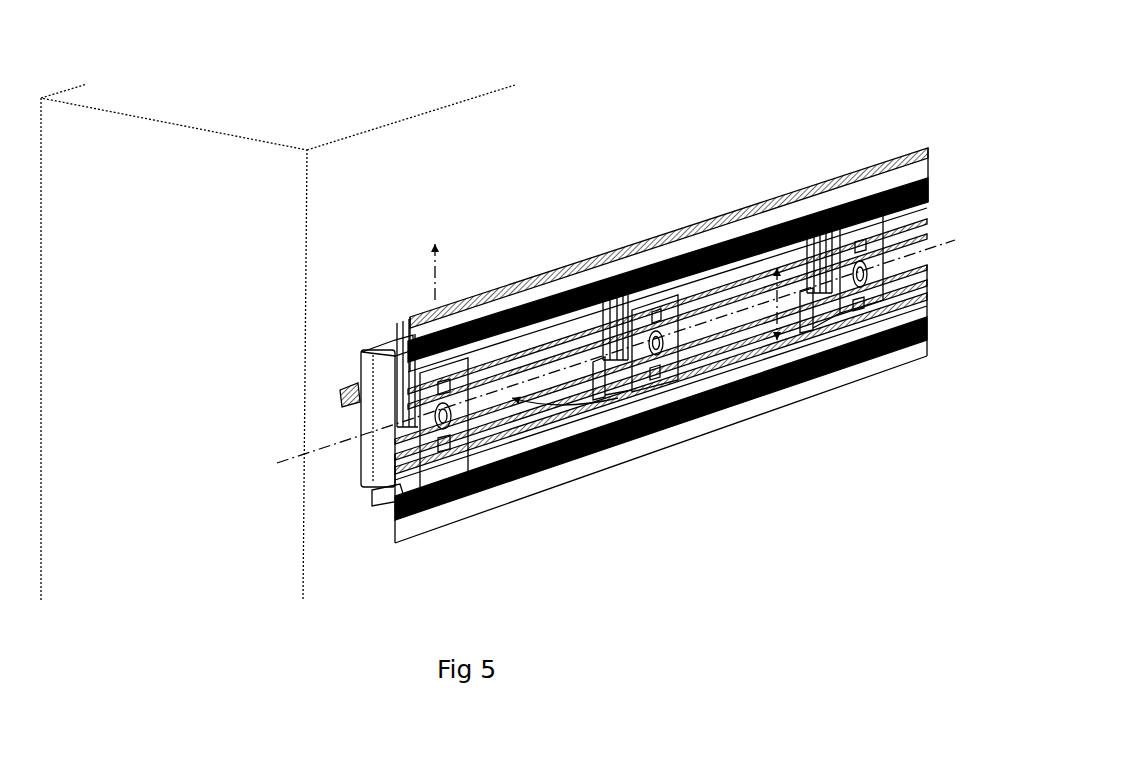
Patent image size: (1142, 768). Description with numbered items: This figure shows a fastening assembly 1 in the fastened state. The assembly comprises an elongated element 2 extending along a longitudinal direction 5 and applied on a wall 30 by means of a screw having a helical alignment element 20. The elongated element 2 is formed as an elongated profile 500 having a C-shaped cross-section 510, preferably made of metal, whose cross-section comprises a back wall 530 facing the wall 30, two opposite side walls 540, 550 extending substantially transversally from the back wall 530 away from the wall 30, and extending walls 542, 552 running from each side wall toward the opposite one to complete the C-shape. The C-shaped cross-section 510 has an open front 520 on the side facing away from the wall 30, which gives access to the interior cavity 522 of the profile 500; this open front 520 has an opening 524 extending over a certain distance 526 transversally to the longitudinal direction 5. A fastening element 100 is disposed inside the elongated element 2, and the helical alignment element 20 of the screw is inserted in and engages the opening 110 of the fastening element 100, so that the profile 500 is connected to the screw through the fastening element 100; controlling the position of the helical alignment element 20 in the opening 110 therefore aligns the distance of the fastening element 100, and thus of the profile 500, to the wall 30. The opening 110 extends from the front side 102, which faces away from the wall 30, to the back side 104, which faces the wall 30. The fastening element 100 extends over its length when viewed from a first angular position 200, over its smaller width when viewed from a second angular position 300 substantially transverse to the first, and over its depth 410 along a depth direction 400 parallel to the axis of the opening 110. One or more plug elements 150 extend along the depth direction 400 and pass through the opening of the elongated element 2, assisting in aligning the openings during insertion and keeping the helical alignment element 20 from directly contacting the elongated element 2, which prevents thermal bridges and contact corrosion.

The fastening assembly 1 is at (566, 110).
The elongated element 2 is at (565, 285).
The longitudinal direction 5 is at (290, 460).
The helical alignment element 20 is at (492, 428).
The wall 30 is at (157, 106).
The fastening element 100 is at (628, 278).
The front side 102 is at (672, 370).
The back side 104 is at (595, 342).
The opening 110 is at (868, 268).
The plug element 150 is at (352, 400).
The longitudinal direction of the fastening element 200 is at (463, 272).
The transverse direction of the fastening element 300 is at (353, 440).
The depth direction 400 is at (615, 456).
The depth 410 is at (385, 412).
The elongated profile 500 is at (840, 267).
The C-shaped cross-section 510 is at (356, 462).
The open front 520 is at (618, 400).
The interior cavity 522 is at (571, 387).
The opening of the open front 524 is at (838, 340).
The distance 526 is at (805, 330).
The back wall 530 is at (330, 440).
The side wall 540 is at (388, 493).
The extending wall 542 is at (405, 490).
The side wall 550 is at (405, 338).
The extending wall 552 is at (411, 345).